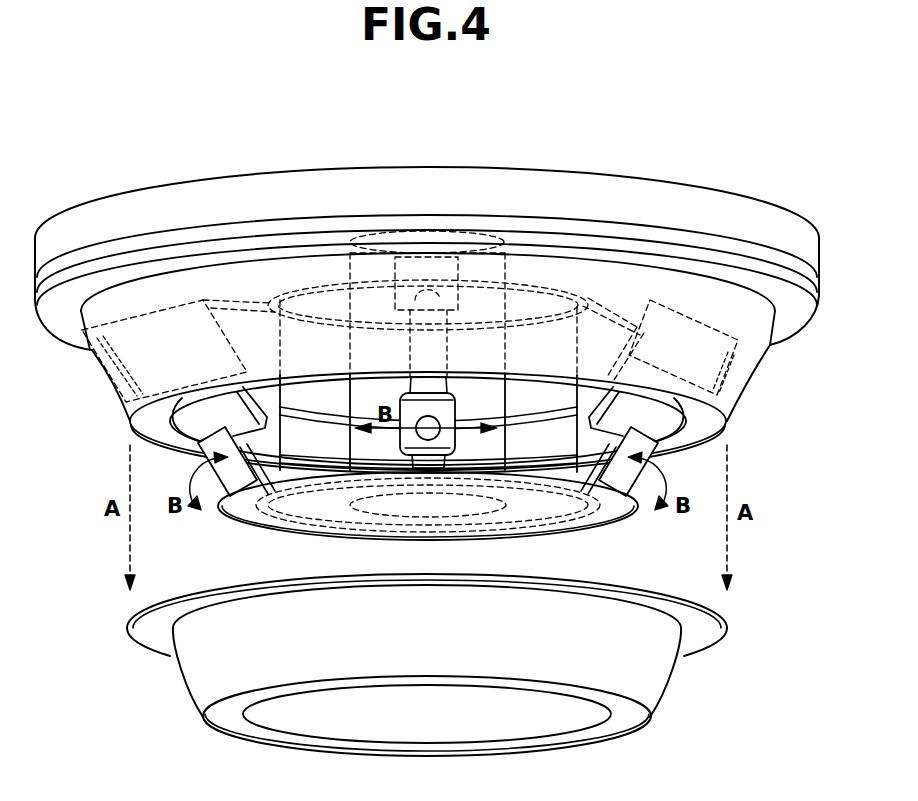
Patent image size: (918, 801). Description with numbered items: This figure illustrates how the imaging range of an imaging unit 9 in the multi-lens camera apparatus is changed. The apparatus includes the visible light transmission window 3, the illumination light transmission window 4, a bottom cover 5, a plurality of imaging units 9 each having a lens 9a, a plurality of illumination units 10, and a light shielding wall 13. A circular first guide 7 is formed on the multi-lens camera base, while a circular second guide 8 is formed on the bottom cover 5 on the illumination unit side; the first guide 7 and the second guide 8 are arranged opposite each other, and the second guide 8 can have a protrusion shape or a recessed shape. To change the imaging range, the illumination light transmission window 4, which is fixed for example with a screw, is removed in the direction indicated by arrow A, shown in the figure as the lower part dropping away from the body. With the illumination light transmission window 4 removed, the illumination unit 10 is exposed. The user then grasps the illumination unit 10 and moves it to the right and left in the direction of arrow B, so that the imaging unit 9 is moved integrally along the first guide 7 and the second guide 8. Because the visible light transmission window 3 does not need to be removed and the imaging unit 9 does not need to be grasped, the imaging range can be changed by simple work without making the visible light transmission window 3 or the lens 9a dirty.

The visible light transmission window 3 is at (716, 295).
The illumination light transmission window 4 is at (650, 677).
The bottom cover 5 is at (262, 526).
The first guide 7 is at (336, 280).
The second guide 8 is at (548, 520).
The imaging unit 9 is at (402, 253).
The lens 9a is at (430, 278).
The illumination unit 10 is at (433, 410).
The light shielding wall 13 is at (712, 425).